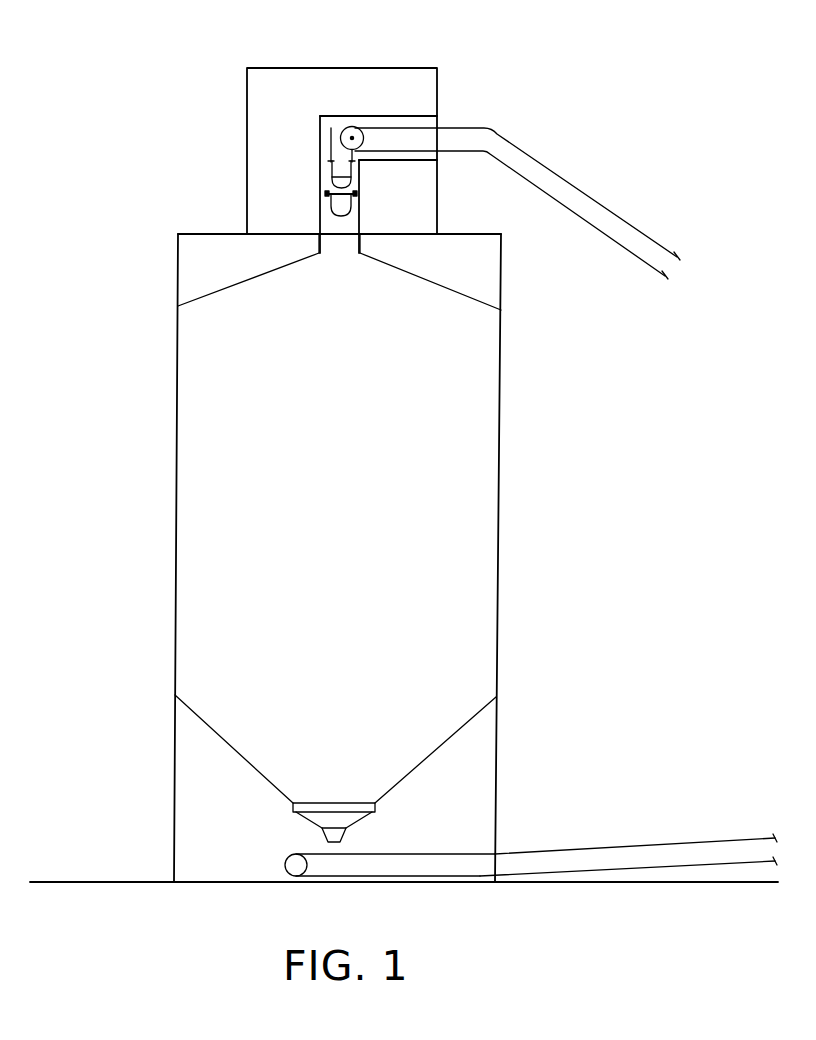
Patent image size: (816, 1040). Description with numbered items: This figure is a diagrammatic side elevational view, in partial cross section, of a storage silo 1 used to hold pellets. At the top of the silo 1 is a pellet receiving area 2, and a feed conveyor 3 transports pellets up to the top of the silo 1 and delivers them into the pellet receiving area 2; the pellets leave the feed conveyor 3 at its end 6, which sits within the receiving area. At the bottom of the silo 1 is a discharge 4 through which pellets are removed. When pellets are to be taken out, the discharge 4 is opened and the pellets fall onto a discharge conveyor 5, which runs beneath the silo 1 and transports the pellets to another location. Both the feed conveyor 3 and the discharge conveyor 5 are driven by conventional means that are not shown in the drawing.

The storage silo 1 is at (498, 479).
The pellet receiving area 2 is at (304, 136).
The feed conveyor 3 is at (668, 200).
The discharge 4 is at (322, 835).
The discharge conveyor 5 is at (634, 845).
The end of conveyor 6 is at (352, 126).